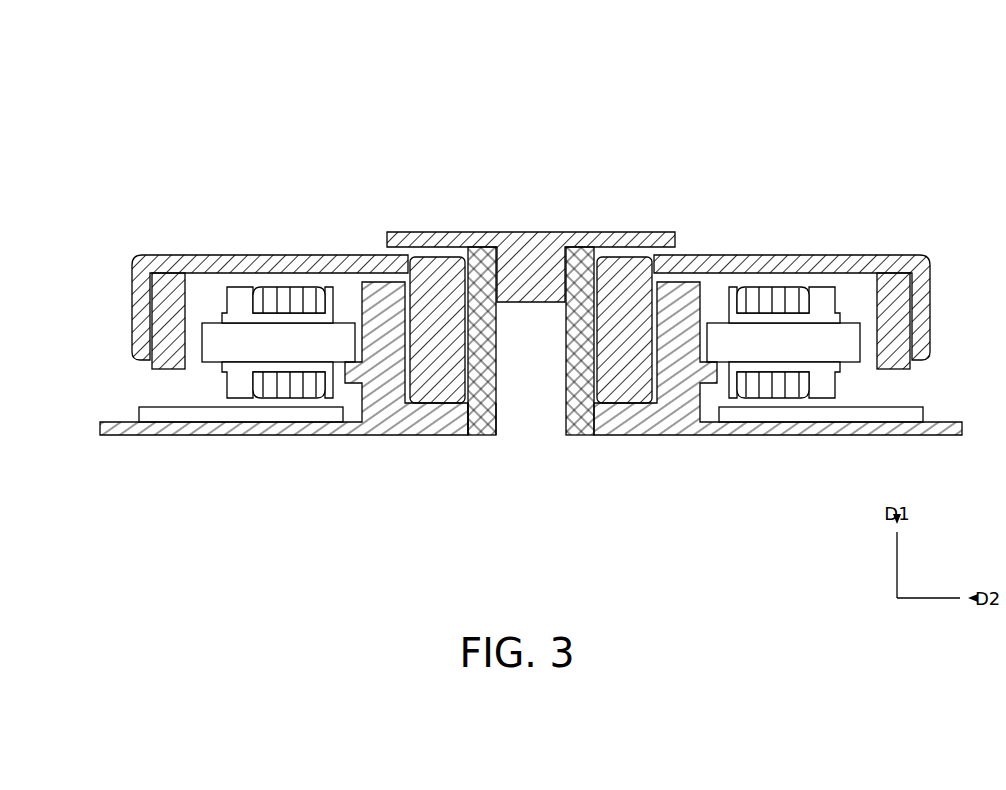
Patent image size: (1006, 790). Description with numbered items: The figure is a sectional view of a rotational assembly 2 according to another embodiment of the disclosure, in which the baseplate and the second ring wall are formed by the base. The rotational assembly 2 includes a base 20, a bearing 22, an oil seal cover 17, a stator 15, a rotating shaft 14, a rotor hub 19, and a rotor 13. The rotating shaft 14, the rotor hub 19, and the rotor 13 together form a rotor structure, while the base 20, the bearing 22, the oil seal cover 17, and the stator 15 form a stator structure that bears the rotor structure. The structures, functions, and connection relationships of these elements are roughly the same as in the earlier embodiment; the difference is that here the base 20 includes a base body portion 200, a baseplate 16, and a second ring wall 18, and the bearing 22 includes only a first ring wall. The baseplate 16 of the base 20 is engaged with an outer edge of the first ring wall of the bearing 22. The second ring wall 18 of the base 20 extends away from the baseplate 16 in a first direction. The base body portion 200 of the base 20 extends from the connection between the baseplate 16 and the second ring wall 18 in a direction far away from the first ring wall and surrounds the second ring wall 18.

The rotational assembly 2 is at (70, 97).
The rotor 13 is at (163, 293).
The rotating shaft 14 is at (438, 288).
The stator 15 is at (270, 298).
The baseplate 16 is at (443, 422).
The oil seal cover 17 is at (530, 265).
The second ring wall 18 is at (384, 400).
The rotor hub 19 is at (277, 262).
The base 20 is at (338, 403).
The bearing 22 is at (482, 461).
The base body portion 200 is at (277, 424).